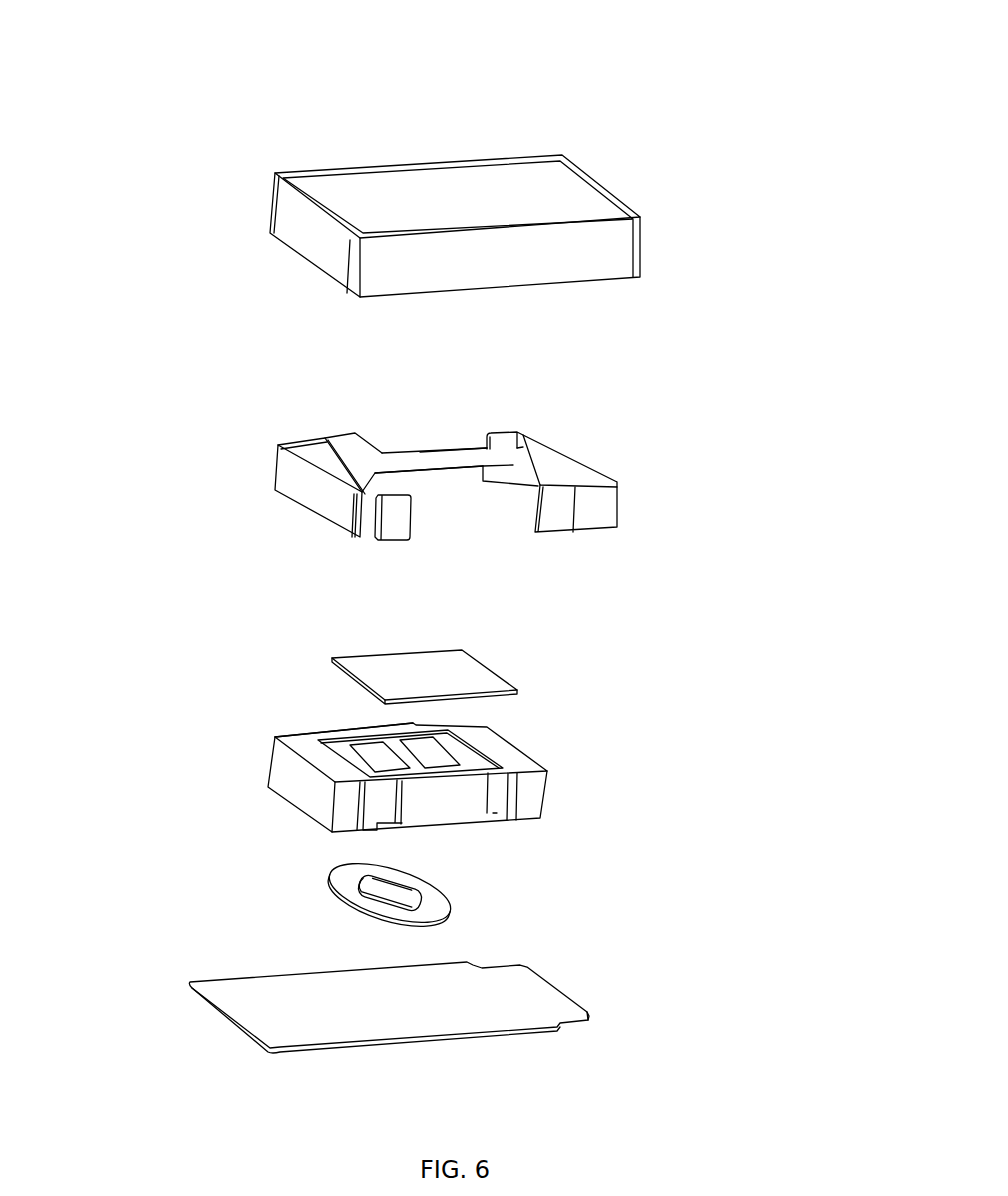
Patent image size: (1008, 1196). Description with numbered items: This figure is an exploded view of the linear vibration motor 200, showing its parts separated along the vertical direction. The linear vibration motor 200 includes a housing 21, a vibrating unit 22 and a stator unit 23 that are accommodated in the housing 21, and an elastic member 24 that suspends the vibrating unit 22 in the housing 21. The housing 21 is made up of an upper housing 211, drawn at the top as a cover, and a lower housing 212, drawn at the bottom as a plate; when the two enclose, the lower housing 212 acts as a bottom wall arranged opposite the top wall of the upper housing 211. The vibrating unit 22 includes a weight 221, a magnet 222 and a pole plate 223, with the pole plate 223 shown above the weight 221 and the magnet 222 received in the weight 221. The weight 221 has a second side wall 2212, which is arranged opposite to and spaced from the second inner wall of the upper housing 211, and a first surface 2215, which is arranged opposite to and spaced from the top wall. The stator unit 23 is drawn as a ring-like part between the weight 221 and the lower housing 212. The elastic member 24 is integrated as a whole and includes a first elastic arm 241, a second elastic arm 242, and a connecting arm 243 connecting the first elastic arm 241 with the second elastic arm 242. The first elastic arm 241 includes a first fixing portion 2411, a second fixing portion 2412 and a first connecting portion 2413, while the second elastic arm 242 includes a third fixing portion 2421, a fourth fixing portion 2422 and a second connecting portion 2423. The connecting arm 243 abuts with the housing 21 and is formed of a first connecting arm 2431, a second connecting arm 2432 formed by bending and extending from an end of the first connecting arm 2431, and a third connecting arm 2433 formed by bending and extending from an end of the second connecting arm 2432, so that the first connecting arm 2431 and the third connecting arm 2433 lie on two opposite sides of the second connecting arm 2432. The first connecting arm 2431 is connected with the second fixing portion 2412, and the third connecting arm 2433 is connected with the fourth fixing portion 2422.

The linear vibration motor 200 is at (503, 43).
The housing 21 is at (92, 950).
The upper housing 211 is at (310, 235).
The lower housing 212 is at (280, 997).
The vibrating unit 22 is at (767, 725).
The weight 221 is at (507, 755).
The magnet 222 is at (453, 765).
The pole plate 223 is at (473, 685).
The second side wall 2212 is at (357, 797).
The first surface 2215 is at (303, 745).
The stator unit 23 is at (417, 887).
The elastic member 24 is at (835, 383).
The first elastic arm 241 is at (767, 448).
The first fixing portion 2411 is at (520, 433).
The second fixing portion 2412 is at (558, 515).
The first connecting portion 2413 is at (580, 467).
The second elastic arm 242 is at (767, 340).
The third fixing portion 2421 is at (395, 478).
The fourth fixing portion 2422 is at (312, 488).
The second connecting portion 2423 is at (375, 457).
The connecting arm 243 is at (772, 575).
The first connecting arm 2431 is at (533, 483).
The second connecting arm 2432 is at (449, 468).
The third connecting arm 2433 is at (395, 478).